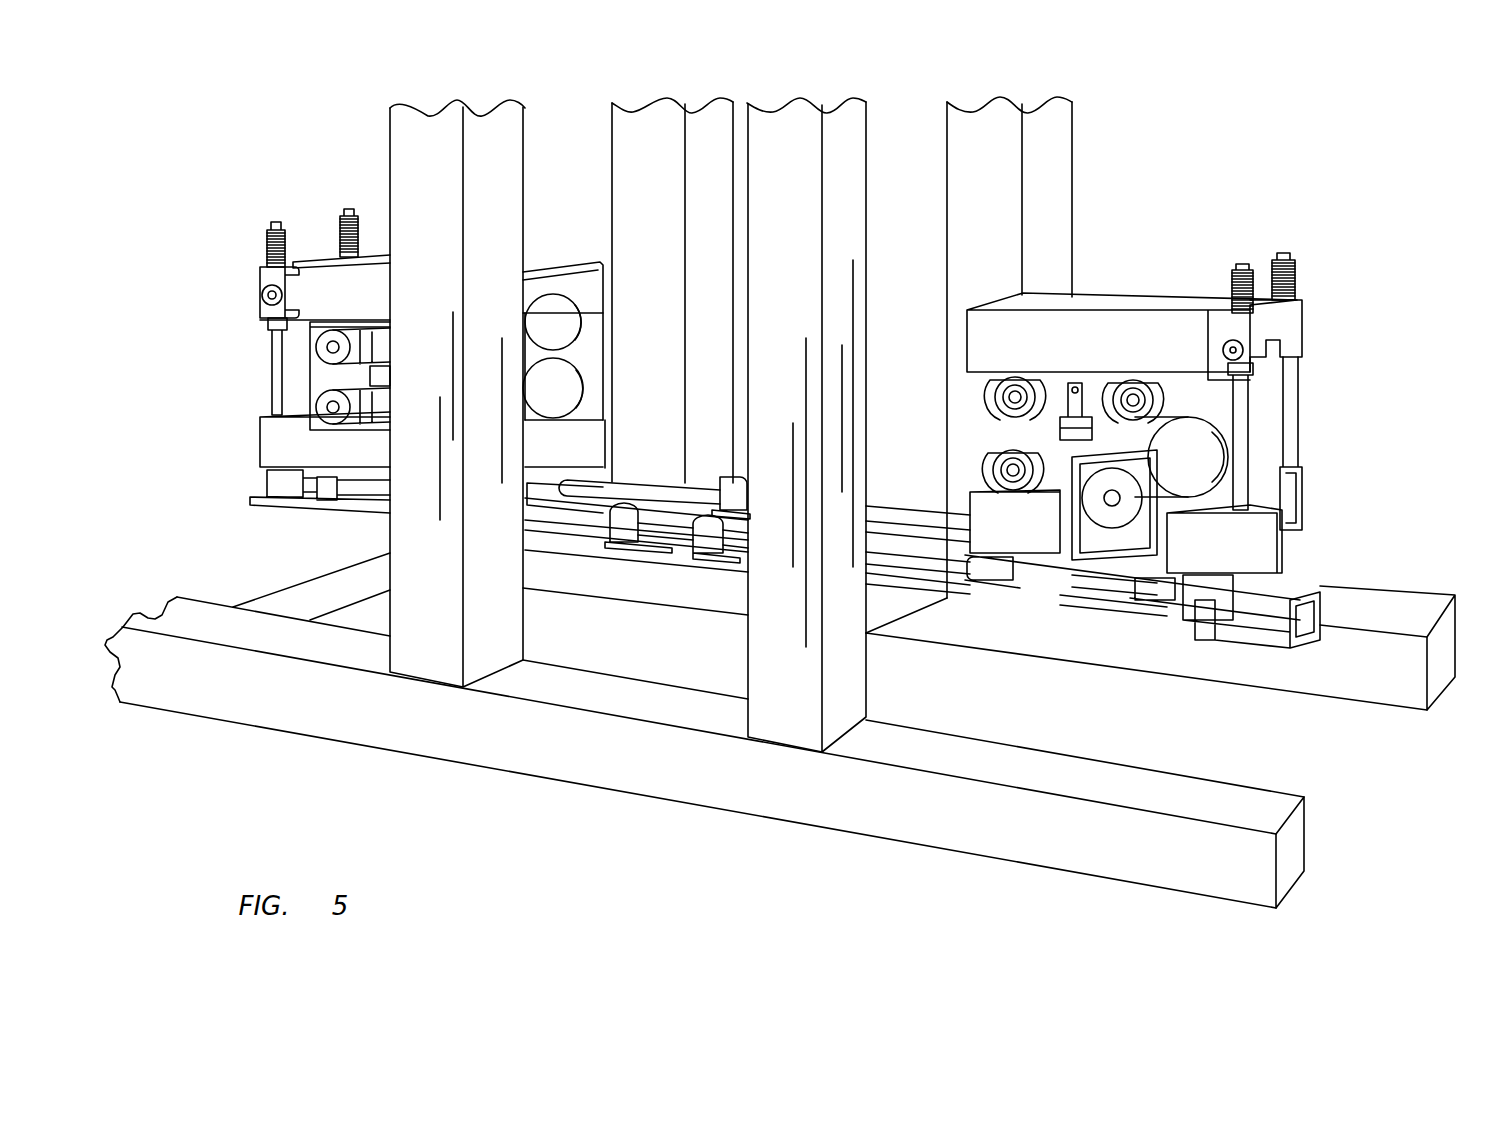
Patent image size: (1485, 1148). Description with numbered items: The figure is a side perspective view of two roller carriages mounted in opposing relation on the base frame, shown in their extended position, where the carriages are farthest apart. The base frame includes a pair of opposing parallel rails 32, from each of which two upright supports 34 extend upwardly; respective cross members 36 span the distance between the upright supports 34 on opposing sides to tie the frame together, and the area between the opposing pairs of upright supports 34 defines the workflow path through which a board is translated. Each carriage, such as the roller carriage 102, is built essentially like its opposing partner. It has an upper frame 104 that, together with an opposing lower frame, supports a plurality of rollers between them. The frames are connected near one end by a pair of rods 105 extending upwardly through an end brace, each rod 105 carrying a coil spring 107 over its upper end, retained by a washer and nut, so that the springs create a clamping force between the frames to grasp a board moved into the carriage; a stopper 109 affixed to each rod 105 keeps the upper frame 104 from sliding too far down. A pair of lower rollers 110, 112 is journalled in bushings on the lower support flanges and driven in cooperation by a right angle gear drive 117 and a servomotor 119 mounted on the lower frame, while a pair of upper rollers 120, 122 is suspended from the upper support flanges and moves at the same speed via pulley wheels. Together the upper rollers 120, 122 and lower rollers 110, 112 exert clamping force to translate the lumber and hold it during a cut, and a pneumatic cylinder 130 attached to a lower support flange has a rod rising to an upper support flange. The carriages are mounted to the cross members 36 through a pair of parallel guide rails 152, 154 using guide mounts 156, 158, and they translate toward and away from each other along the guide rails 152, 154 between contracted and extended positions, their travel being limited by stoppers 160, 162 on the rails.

The rail 32 is at (340, 740).
The upright support 34 is at (650, 195).
The cross member 36 is at (555, 593).
The roller carriage 102 is at (238, 438).
The upper frame 104 is at (1153, 478).
The rod 105 is at (1297, 452).
The coil spring 107 is at (1243, 267).
The stopper 109 is at (1250, 386).
The lower roller 110 is at (1018, 433).
The lower roller 112 is at (1200, 483).
The right angle gear drive 117 is at (1105, 553).
The servomotor 119 is at (1230, 540).
The upper roller 120 is at (990, 392).
The upper roller 122 is at (1200, 397).
The pneumatic cylinder 130 is at (1063, 480).
The guide rail 152 is at (735, 540).
The guide rail 154 is at (642, 488).
The guide mount 156 is at (992, 567).
The guide mount 158 is at (1152, 590).
The stopper 160 is at (700, 535).
The stopper 162 is at (1200, 600).